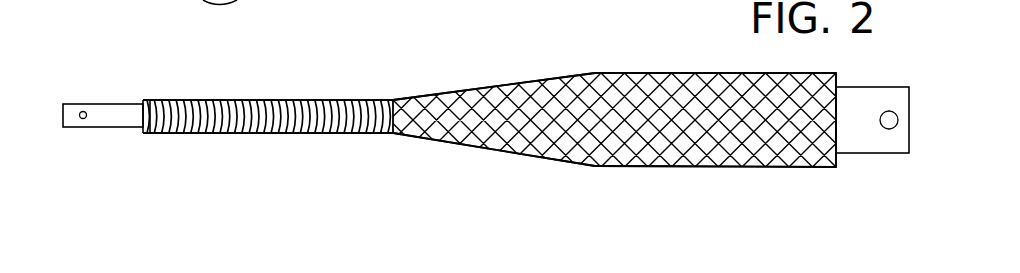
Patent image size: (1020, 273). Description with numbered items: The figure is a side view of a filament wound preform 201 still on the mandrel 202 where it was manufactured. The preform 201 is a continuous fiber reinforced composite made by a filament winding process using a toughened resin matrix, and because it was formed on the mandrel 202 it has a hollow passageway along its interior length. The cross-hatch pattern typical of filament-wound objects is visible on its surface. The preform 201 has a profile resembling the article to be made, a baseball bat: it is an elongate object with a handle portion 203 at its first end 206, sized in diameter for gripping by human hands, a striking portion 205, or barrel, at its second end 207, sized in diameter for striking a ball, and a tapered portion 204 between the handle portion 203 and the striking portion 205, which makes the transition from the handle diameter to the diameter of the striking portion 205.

The filament wound preform 201 is at (624, 133).
The mandrel 202 is at (113, 122).
The handle portion 203 is at (265, 130).
The tapered portion 204 is at (503, 86).
The striking portion 205 is at (711, 73).
The first end 206 is at (152, 98).
The second end 207 is at (835, 168).